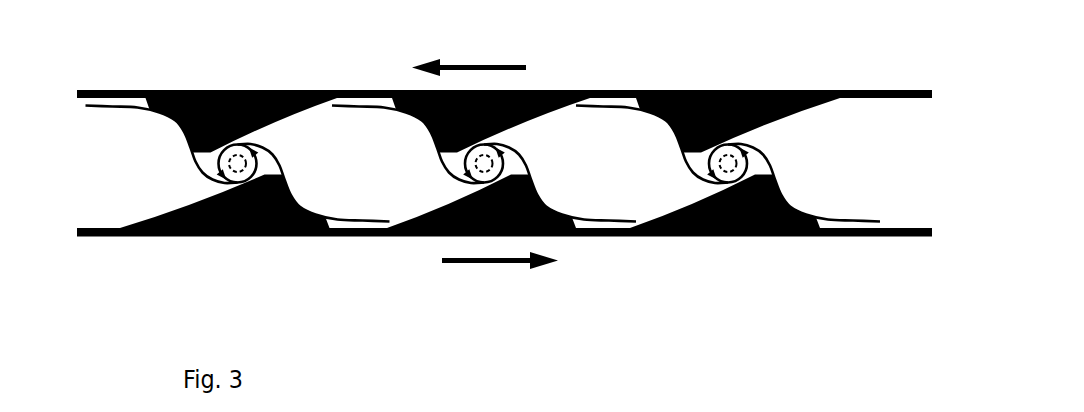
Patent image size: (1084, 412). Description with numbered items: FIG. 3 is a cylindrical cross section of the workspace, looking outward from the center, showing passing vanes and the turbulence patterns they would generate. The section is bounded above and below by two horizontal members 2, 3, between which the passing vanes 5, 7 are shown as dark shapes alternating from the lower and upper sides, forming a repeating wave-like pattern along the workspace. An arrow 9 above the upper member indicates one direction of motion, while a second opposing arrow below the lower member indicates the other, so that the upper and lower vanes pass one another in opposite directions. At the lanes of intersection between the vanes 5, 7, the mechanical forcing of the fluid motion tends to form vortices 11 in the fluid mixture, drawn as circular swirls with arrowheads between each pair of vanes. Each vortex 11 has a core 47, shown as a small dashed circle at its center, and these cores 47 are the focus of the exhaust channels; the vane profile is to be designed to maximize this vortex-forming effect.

The upper plate 2 is at (220, 90).
The lower plate 3 is at (726, 237).
The vane 5 is at (203, 206).
The vane 7 is at (267, 121).
The flow direction 9 is at (481, 65).
The vortex 11 is at (466, 163).
The vortex core 47 is at (493, 161).